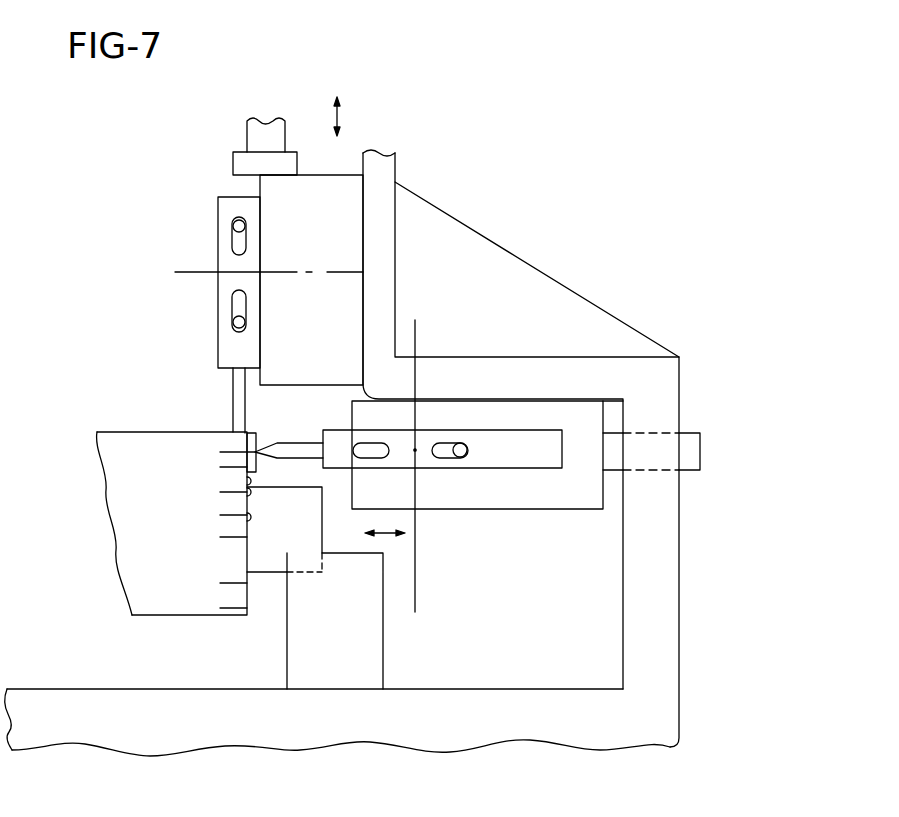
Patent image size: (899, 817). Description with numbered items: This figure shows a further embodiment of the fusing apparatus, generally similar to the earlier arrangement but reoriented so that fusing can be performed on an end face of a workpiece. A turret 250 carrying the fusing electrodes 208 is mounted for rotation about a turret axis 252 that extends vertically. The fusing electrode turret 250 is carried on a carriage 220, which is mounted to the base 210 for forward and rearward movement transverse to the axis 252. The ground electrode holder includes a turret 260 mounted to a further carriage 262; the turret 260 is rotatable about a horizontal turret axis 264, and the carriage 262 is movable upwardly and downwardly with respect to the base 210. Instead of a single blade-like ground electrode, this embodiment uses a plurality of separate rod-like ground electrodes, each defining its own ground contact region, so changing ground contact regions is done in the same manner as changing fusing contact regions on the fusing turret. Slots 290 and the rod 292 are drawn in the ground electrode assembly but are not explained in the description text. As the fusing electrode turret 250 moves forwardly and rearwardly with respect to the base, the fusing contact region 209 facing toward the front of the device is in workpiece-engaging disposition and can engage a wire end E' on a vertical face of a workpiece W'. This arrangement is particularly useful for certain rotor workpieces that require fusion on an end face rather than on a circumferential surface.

The base 210 is at (680, 611).
The turret 260 is at (218, 341).
The carriage 262 is at (273, 187).
The turret axis 264 is at (182, 272).
The slots 290 is at (236, 310).
The blade rod 292 is at (241, 426).
The workpiece W' is at (140, 523).
The wire end E' is at (194, 485).
The fusing contact region 209 is at (265, 443).
The fusing electrodes 208 is at (297, 461).
The turret 250 is at (457, 468).
The carriage 220 is at (539, 510).
The turret axis 252 is at (415, 592).